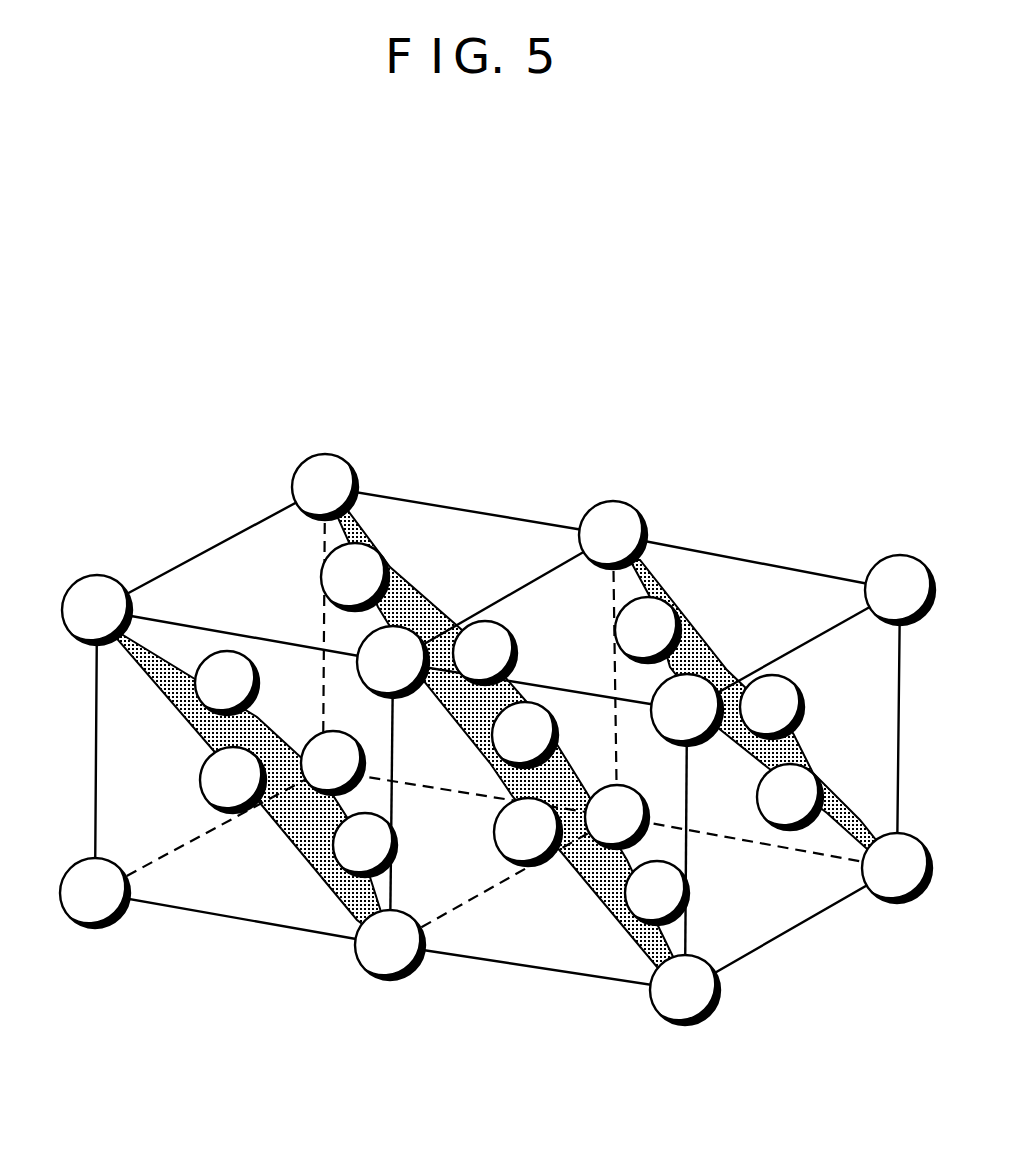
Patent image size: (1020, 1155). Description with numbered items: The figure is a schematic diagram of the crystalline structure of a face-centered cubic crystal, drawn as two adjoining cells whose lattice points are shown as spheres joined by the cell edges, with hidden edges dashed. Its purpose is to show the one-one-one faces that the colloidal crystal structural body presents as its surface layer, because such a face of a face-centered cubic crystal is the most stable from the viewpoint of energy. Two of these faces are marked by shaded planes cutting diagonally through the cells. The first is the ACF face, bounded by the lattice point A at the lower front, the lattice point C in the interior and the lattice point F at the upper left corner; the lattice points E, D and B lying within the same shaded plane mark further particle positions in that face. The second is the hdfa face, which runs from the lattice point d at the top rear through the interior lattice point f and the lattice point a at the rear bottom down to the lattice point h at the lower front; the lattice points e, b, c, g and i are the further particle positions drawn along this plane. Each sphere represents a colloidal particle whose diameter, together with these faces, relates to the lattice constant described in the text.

The lattice point F is at (97, 610).
The lattice site E (atom in first diagonal plane) E is at (227, 683).
The lattice site D (atom in first diagonal plane) D is at (233, 780).
The lattice point C is at (333, 763).
The lattice site B (atom in first diagonal plane) B is at (365, 845).
The lattice point A is at (390, 945).
The lattice point d is at (325, 487).
The lattice site e (atom in second diagonal plane) e is at (355, 577).
The lattice point f is at (393, 662).
The lattice site b (atom in second diagonal plane) b is at (485, 653).
The lattice site c (atom in second diagonal plane) c is at (525, 735).
The lattice site g (atom in second diagonal plane) g is at (528, 832).
The lattice point a is at (617, 817).
The lattice site i (atom in second diagonal plane) i is at (657, 893).
The lattice point h is at (685, 990).